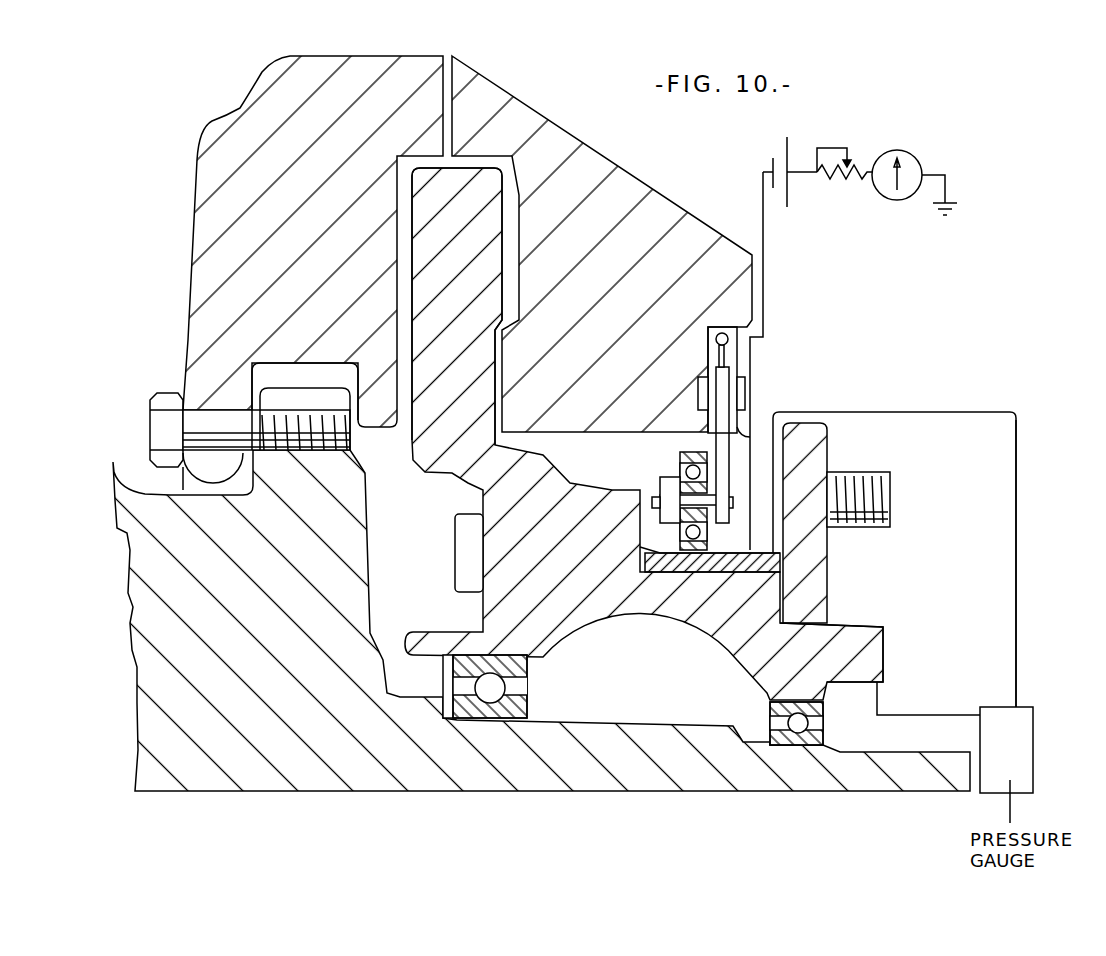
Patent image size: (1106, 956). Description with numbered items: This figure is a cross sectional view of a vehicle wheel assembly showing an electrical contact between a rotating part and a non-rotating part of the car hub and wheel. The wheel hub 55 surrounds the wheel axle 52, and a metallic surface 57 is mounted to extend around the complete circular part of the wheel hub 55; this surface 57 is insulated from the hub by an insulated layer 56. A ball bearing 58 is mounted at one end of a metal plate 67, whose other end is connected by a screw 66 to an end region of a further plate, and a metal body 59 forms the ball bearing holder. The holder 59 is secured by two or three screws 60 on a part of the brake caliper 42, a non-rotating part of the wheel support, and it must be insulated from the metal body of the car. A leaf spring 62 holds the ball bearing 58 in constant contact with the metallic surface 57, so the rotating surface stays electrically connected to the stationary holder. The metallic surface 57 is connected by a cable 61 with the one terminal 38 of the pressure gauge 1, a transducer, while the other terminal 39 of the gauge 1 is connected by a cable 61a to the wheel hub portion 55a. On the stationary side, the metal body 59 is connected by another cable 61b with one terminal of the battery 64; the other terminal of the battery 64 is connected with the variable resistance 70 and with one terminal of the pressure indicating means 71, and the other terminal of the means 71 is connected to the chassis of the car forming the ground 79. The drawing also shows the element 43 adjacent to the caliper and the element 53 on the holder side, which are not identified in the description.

The brake caliper 42 is at (200, 231).
The rib 43 is at (475, 185).
The wheel axle 52 is at (613, 748).
The screw 53 is at (848, 527).
The wheel hub 55 is at (567, 627).
The wheel hub portion 55a is at (868, 643).
The insulated layer 56 is at (665, 570).
The metallic surface 57 is at (648, 572).
The ball bearing 58 is at (677, 464).
The ball bearing holder 59 is at (710, 363).
The screws 60 is at (717, 324).
The cable 61 is at (859, 412).
The cable 61a is at (830, 725).
The cable 61b is at (764, 288).
The leaf spring 62 is at (735, 362).
The battery 64 is at (778, 200).
The screw 66 is at (734, 396).
The metal plate 67 is at (714, 443).
The variable resistance 70 is at (857, 165).
The pressure indicating means 71 is at (916, 157).
The ground 79 is at (950, 222).
The terminal 38 is at (1015, 632).
The terminal 39 is at (913, 717).
The pressure gauge 1 is at (990, 705).